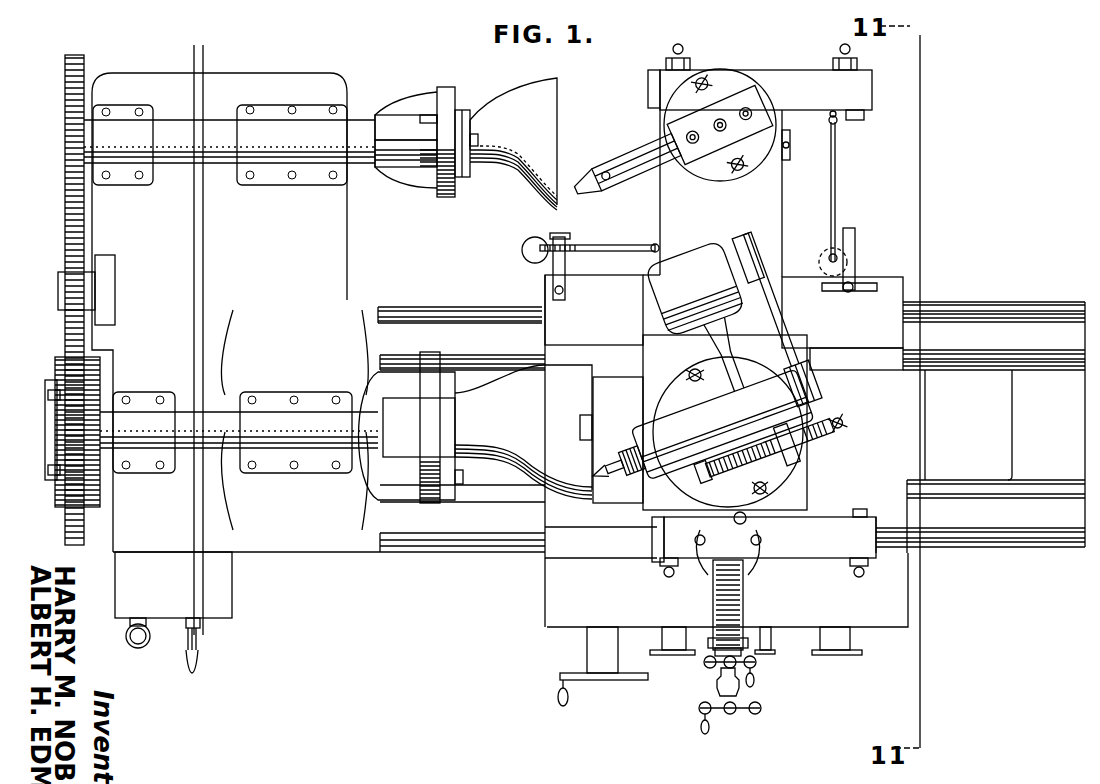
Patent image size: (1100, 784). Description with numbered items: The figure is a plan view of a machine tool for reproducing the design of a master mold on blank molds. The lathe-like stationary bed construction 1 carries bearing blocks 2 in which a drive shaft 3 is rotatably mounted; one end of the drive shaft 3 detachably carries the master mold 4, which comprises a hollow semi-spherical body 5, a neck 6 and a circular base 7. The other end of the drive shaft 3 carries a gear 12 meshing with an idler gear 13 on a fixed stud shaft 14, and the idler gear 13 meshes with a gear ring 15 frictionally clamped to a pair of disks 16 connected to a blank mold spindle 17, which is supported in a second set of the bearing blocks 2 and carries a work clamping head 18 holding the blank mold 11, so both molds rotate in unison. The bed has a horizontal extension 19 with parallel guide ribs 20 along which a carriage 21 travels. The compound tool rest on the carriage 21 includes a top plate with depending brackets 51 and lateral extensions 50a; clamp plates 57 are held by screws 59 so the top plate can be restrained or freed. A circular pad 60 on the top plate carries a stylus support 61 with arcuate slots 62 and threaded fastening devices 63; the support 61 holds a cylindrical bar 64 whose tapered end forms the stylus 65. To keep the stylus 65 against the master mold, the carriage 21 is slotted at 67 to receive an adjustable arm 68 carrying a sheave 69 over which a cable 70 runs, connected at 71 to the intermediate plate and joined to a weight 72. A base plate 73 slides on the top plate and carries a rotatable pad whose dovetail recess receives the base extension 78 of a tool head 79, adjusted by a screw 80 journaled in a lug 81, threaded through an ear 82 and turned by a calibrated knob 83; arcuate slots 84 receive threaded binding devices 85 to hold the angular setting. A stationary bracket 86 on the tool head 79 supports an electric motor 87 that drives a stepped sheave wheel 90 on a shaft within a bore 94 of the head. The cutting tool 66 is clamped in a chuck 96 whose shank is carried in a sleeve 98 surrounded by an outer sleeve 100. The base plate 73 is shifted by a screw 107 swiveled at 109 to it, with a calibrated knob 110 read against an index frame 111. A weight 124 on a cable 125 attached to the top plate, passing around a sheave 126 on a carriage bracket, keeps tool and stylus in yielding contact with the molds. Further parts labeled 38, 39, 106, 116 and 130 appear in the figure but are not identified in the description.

The stationary bed construction 1 is at (455, 310).
The bearing blocks 2 is at (133, 168).
The drive shaft 3 is at (222, 160).
The master mold 4 is at (527, 95).
The hollow semi-spherical body 5 is at (518, 185).
The neck 6 is at (458, 105).
The circular base 7 is at (452, 190).
The blank mold 11 is at (490, 358).
The gear 12 is at (65, 135).
The idler gear 13 is at (58, 286).
The fixed stud shaft 14 is at (60, 302).
The gear ring 15 is at (48, 395).
The disks 16 is at (65, 438).
The blank mold spindle 17 is at (190, 452).
The work clamping head 18 is at (425, 492).
The horizontal extension 19 is at (983, 348).
The guide ribs 20 is at (1046, 318).
The carriage 21 is at (888, 370).
The leg 38 is at (672, 656).
The leg 39 is at (598, 681).
The lateral extensions of top plate 50a is at (762, 314).
The depending brackets 51 is at (666, 63).
The clamp plates 57 is at (866, 113).
The screws 59 is at (858, 120).
The circular pad 60 is at (822, 442).
The stylus support 61 is at (745, 92).
The arcuate slots 62 is at (704, 77).
The threaded fastening devices 63 is at (682, 96).
The cylindrical bar 64 is at (626, 148).
The stylus 65 is at (583, 192).
The cutting tool 66 is at (604, 478).
The slot 67 is at (870, 277).
The adjustable arm 68 is at (855, 250).
The sheave 69 is at (836, 236).
The cable 70 is at (838, 176).
The cable connection 71 is at (830, 124).
The weight 72 is at (822, 262).
The base plate 73 is at (645, 388).
The base extension 78 is at (650, 418).
The tool head 79 is at (723, 425).
The screw 80 is at (800, 442).
The lug 81 is at (690, 485).
The ear 82 is at (800, 470).
The calibrated manipulating knob 83 is at (844, 426).
The arcuate slots 84 is at (688, 376).
The threaded binding devices 85 is at (694, 368).
The stationary bracket 86 is at (745, 244).
The electric motor 87 is at (648, 321).
The stepped sheave wheel 90 is at (818, 375).
The bore 94 is at (175, 590).
The chuck 96 is at (592, 462).
The sleeve 98 is at (640, 470).
The sleeve 100 is at (650, 436).
The yoke 106 is at (750, 575).
The screw 107 is at (745, 600).
The swivel 109 is at (655, 537).
The calibrated knob 110 is at (712, 642).
The index frame 111 is at (745, 645).
The handle 116 is at (742, 692).
The weight 124 is at (522, 252).
The cable 125 is at (598, 247).
The sheave 126 is at (560, 236).
The cross bar 130 is at (872, 88).